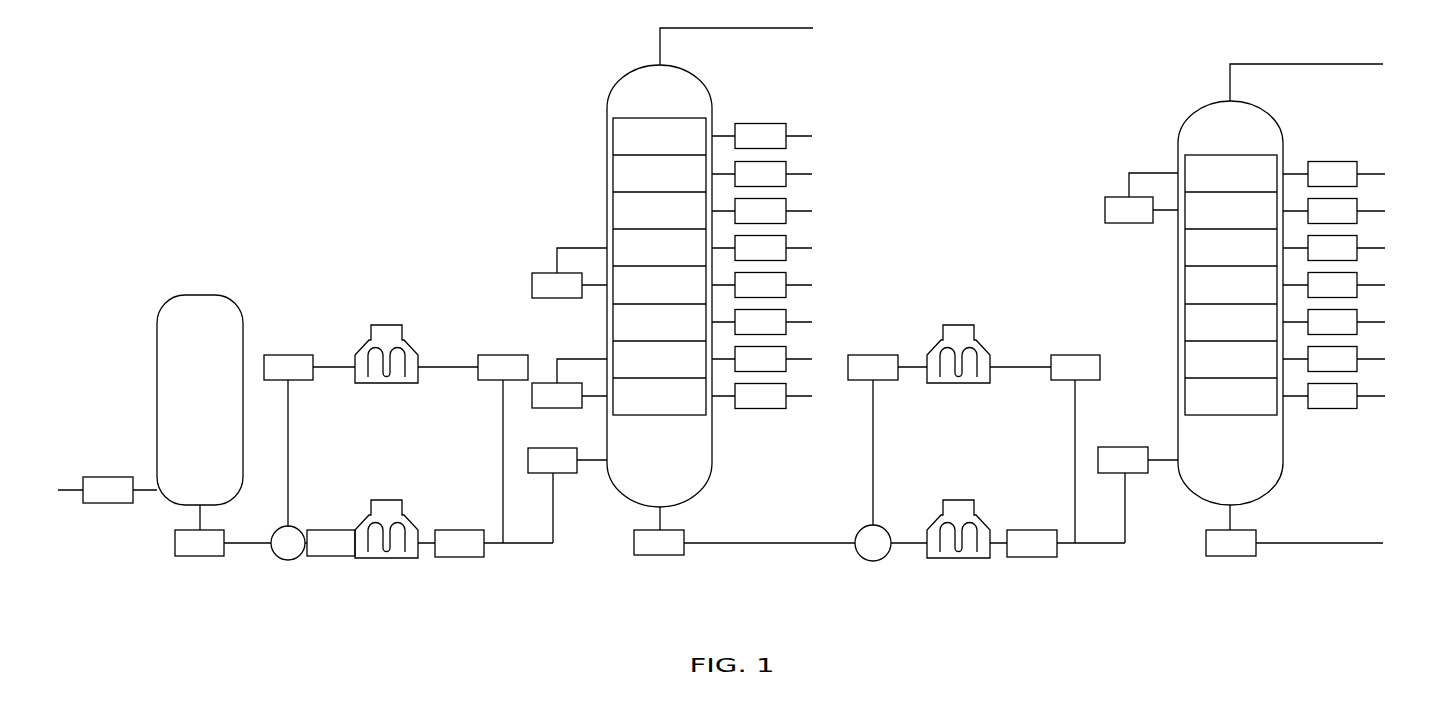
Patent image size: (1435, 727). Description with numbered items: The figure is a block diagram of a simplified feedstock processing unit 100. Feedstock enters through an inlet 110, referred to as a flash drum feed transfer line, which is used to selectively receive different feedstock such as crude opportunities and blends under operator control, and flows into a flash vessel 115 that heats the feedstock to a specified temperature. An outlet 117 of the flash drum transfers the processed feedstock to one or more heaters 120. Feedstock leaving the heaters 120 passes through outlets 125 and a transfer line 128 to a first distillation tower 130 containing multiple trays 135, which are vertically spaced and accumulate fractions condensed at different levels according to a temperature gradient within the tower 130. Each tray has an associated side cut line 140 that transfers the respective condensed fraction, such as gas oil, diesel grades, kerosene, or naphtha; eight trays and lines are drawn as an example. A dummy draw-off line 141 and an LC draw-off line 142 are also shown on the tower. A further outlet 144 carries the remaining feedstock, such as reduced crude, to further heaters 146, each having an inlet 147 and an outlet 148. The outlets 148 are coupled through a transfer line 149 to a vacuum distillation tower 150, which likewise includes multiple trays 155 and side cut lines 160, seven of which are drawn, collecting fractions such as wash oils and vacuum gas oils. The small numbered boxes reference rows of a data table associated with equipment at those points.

The feedstock processing unit 100 is at (180, 92).
The inlet 110 is at (78, 491).
The flash vessel 115 is at (200, 296).
The outlet 117 is at (255, 544).
The heaters 120 is at (388, 325).
The outlets 125 is at (445, 365).
The transfer line 128 is at (553, 520).
The first distillation tower 130 is at (623, 79).
The trays 135 is at (627, 153).
The side cut line 140 is at (803, 135).
The dummy draw-off line 141 is at (584, 247).
The LC draw-off line 142 is at (588, 358).
The further outlet 144 is at (768, 544).
The heaters 146 is at (960, 326).
The inlet 147 is at (908, 366).
The outlet 148 is at (1016, 366).
The transfer line 149 is at (1125, 520).
The vacuum distillation tower 150 is at (1194, 118).
The trays 155 is at (1198, 232).
The side cut lines 160 is at (1370, 173).